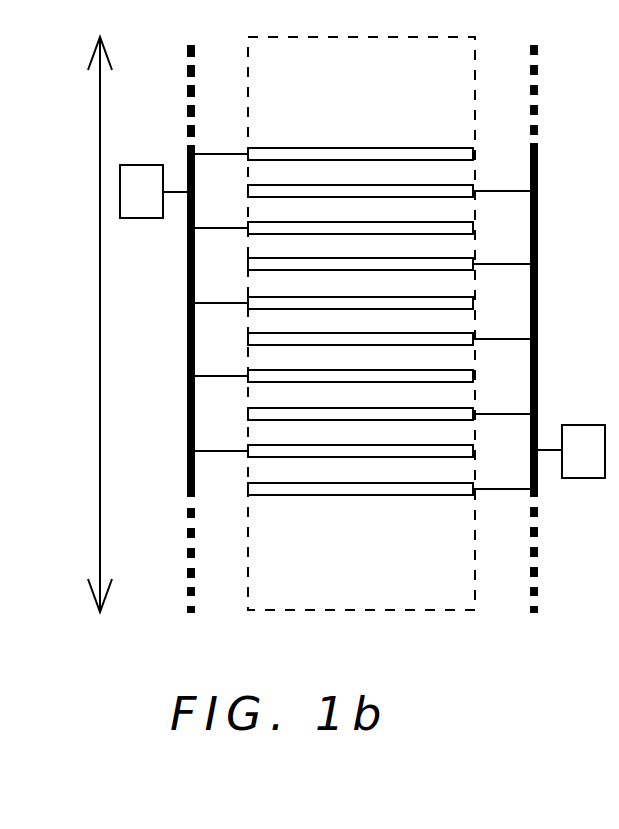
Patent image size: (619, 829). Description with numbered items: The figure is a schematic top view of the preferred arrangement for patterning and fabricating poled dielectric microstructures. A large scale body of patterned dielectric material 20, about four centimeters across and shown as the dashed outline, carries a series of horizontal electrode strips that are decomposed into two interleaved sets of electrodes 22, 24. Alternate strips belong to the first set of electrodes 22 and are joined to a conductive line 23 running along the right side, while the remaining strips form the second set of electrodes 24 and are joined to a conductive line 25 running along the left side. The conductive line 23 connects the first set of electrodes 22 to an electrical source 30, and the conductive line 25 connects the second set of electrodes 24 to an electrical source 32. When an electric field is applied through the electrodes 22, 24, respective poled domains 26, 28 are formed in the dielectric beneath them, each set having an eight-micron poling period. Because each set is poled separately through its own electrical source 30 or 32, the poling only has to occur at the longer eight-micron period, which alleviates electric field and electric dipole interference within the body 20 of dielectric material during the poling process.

The patterned dielectric material 20 is at (462, 548).
The first set of electrodes 22 is at (448, 420).
The conductive line 23 is at (540, 229).
The second set of electrodes 24 is at (279, 382).
The conductive line 25 is at (187, 420).
The domains 26 is at (442, 272).
The domains 28 is at (279, 233).
The electrical source 30 is at (583, 425).
The electrical source 32 is at (143, 165).